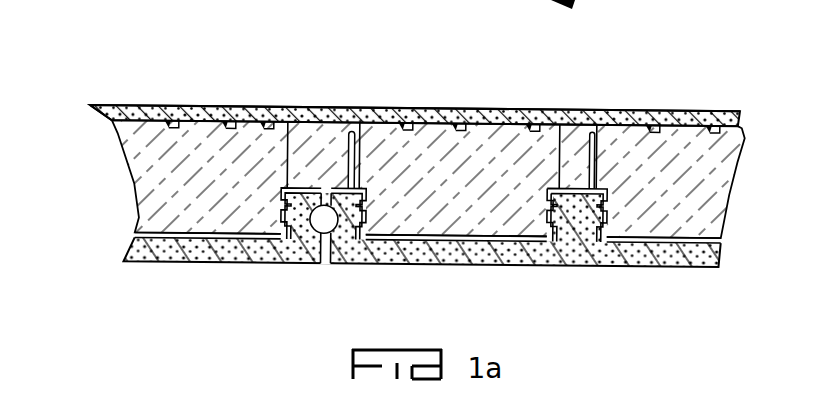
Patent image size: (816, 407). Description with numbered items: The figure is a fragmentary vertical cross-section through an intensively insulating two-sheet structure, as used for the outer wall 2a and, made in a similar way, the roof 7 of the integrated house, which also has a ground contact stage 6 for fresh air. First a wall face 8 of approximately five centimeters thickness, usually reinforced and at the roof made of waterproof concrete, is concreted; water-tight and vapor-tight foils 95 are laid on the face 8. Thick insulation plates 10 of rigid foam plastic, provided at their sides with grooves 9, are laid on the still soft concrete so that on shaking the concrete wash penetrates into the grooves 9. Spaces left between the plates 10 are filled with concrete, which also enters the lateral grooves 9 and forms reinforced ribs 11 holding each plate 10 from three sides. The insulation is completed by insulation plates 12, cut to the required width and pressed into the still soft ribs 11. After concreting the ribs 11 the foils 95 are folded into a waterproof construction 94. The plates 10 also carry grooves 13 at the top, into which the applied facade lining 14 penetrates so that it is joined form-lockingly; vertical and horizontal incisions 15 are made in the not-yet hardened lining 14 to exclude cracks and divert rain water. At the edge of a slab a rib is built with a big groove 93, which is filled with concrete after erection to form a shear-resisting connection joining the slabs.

The roof 7 is at (176, 90).
The two-sheet outer wall 2a is at (104, 118).
The facade lining 14 is at (391, 113).
The incisions 15 is at (389, 100).
The grooves 13 is at (459, 126).
The insulation plates 12 is at (566, 134).
The waterproof construction 94 is at (587, 140).
The ground contact stage 6 is at (602, 0).
The insulation plates 10 is at (480, 220).
The foils 95 is at (519, 242).
The wall face 8 is at (415, 260).
The ribs 11 is at (312, 250).
The groove 93 is at (330, 228).
The grooves 9 is at (609, 224).